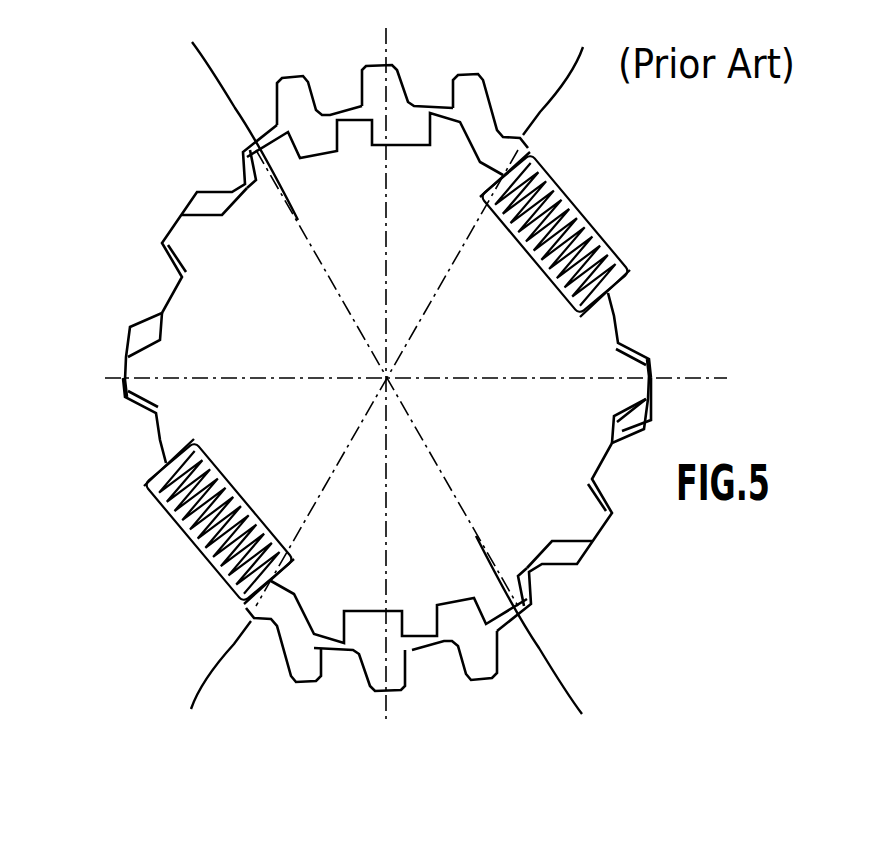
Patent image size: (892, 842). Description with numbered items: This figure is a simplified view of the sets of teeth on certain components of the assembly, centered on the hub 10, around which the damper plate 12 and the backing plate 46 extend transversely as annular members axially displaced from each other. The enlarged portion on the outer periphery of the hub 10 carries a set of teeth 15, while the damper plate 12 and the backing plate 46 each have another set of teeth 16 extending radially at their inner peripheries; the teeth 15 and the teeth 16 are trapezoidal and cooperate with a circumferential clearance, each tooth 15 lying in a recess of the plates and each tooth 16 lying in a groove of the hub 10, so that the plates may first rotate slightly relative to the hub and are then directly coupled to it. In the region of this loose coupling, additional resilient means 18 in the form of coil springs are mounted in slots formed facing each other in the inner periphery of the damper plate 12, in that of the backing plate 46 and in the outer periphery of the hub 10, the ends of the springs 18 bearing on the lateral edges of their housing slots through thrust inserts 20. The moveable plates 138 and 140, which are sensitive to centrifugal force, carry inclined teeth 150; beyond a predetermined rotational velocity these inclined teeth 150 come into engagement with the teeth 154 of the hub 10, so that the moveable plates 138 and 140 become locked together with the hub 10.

The hub 10 is at (488, 371).
The damper plate 12 is at (345, 366).
The teeth 15 is at (150, 334).
The teeth 16 is at (641, 422).
The resilient means 18 is at (582, 206).
The thrust inserts 20 is at (538, 143).
The backing plate 46 is at (236, 182).
The moveable plate 138 is at (408, 63).
The moveable plate 140 is at (428, 655).
The inclined teeth 150 is at (325, 118).
The teeth 154 is at (291, 119).